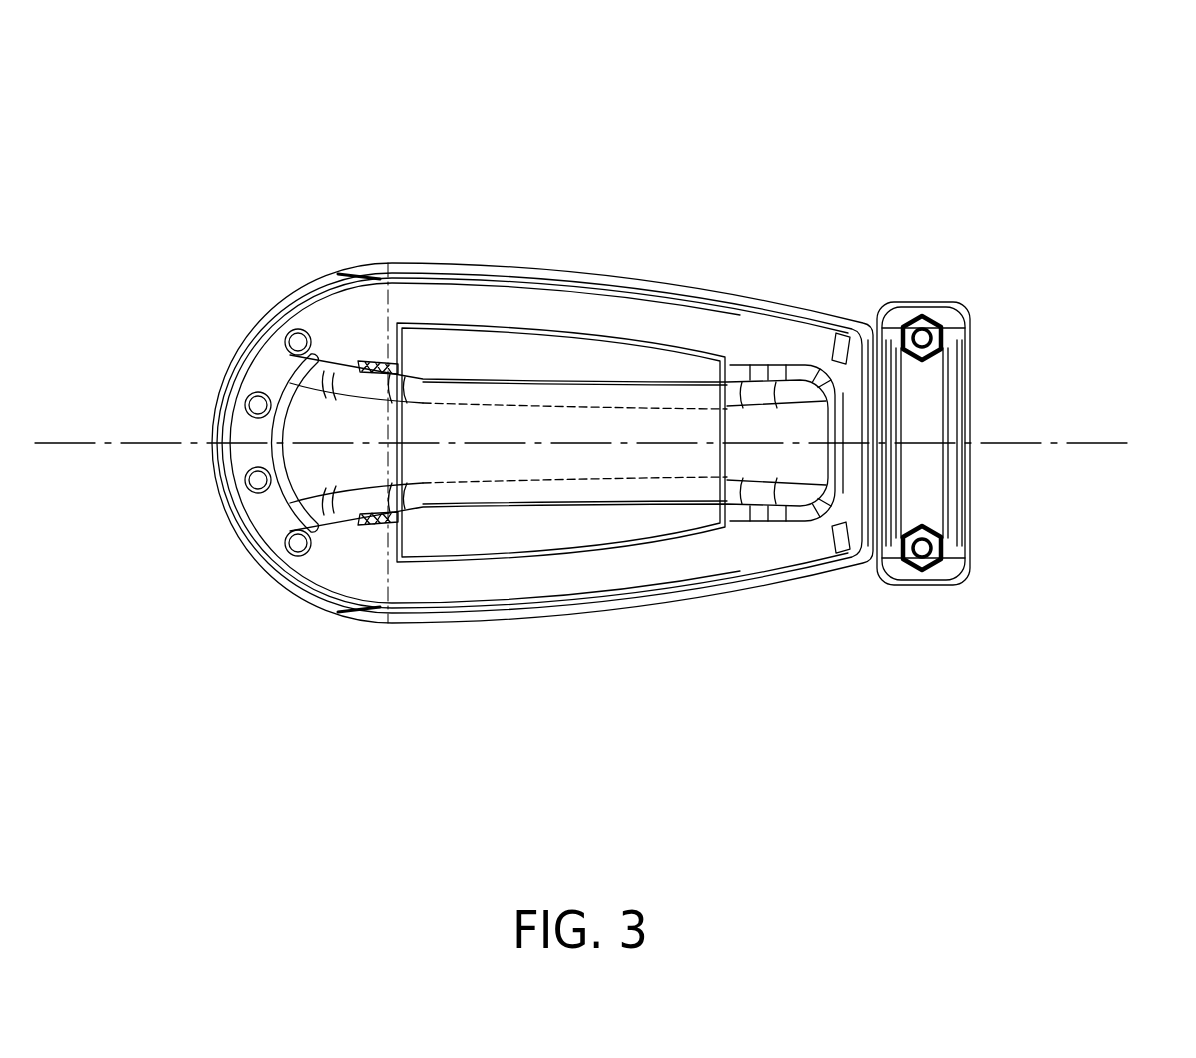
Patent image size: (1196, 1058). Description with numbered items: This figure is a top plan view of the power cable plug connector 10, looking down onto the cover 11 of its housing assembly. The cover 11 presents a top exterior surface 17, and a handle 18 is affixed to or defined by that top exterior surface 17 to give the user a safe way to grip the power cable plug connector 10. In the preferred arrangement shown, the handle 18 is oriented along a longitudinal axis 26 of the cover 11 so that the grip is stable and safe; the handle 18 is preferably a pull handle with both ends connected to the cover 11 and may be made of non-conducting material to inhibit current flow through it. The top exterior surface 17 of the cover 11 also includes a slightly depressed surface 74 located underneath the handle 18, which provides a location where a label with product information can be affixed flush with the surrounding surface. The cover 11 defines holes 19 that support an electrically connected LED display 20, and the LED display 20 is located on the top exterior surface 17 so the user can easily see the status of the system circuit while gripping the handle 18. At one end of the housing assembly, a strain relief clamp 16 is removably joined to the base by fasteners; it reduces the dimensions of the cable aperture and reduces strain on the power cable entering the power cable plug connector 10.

The power cable plug connector 10 is at (1120, 110).
The cover 11 is at (433, 308).
The strain relief clamp 16 is at (927, 403).
The top exterior surface 17 is at (777, 343).
The handle 18 is at (640, 405).
The hole 19 is at (287, 536).
The LED display 20 is at (256, 392).
The longitudinal axis 26 is at (602, 444).
The slightly depressed surface 74 is at (510, 352).